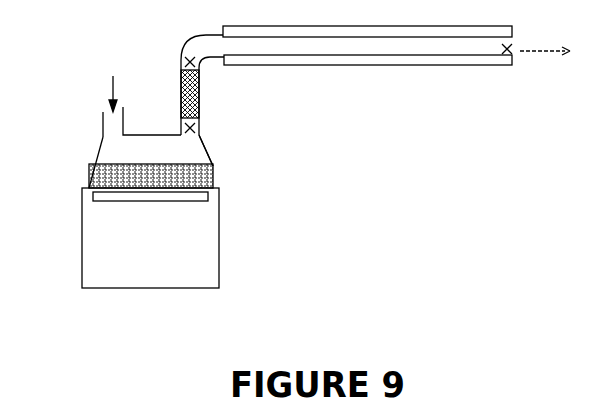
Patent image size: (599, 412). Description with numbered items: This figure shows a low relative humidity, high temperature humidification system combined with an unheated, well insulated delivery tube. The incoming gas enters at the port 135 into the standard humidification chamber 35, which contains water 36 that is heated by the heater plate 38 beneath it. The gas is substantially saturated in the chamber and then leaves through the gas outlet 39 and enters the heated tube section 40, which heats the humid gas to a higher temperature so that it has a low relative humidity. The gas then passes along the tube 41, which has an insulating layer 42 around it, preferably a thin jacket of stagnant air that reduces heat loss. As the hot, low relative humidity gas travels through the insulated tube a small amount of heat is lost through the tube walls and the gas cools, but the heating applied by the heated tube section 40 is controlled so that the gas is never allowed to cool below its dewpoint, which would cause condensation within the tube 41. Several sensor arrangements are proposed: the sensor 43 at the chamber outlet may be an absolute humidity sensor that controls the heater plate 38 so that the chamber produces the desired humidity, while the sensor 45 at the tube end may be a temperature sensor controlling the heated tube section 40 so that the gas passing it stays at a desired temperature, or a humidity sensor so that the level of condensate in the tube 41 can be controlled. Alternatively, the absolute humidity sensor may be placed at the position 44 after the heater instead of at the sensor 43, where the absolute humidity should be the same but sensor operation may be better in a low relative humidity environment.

The humidification chamber 35 is at (97, 142).
The port 135 is at (103, 112).
The water 36 is at (89, 172).
The heater plate 38 is at (112, 196).
The gas outlet 39 is at (207, 150).
The heated tube section 40 is at (181, 95).
The tube 41 is at (313, 65).
The insulating layer 42 is at (380, 65).
The sensor 43 is at (200, 130).
The position for absolute humidity sensor 44 is at (182, 60).
The sensor 45 is at (512, 57).